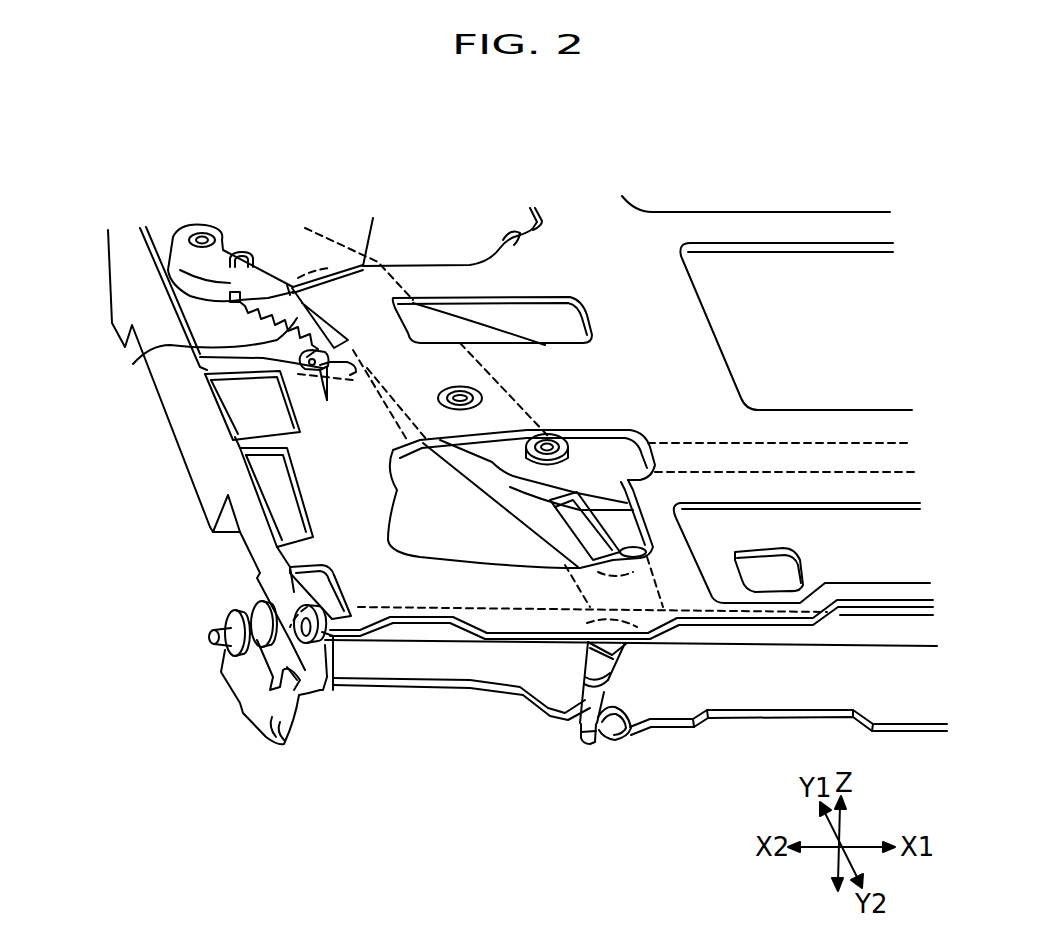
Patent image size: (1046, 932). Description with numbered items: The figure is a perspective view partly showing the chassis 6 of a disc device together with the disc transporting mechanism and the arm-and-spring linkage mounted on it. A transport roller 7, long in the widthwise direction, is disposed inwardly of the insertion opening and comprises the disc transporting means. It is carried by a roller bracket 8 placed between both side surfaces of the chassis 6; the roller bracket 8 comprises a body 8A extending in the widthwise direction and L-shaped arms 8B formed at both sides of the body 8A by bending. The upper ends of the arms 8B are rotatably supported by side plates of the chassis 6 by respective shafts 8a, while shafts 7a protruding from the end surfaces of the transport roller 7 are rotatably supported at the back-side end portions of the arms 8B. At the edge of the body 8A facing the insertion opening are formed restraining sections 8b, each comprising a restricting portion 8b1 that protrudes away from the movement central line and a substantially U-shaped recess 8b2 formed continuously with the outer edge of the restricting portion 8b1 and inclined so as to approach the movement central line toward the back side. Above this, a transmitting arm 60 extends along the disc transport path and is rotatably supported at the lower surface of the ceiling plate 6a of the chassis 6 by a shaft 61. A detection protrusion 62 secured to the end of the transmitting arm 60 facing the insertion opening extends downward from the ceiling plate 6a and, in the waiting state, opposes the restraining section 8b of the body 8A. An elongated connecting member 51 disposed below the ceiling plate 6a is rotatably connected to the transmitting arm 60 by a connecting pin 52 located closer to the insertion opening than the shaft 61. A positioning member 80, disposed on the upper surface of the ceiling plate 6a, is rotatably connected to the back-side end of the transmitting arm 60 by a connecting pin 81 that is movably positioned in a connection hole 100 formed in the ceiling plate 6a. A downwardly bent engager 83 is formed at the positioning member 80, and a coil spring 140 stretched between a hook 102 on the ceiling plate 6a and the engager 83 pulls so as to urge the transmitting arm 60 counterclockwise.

The connection hole 100 is at (528, 246).
The hook 102 is at (322, 368).
The coil spring 140 is at (198, 357).
The chassis 6 is at (215, 448).
The ceiling plate 6a is at (313, 480).
The transport roller 7 is at (362, 620).
The shaft 7a is at (228, 628).
The roller bracket 8 is at (405, 749).
The body 8A is at (458, 739).
The arm 8B is at (283, 744).
The shaft 8a is at (327, 690).
The restraining section 8b is at (597, 764).
The restricting portion 8b1 is at (588, 742).
The recess 8b2 is at (626, 736).
The connecting member 51 is at (690, 472).
The connecting pin 52 is at (549, 445).
The transmitting arm 60 is at (525, 493).
The shaft 61 is at (467, 390).
The detection protrusion 62 is at (607, 668).
The positioning member 80 is at (233, 245).
The connecting pin 81 is at (203, 230).
The engager 83 is at (250, 294).